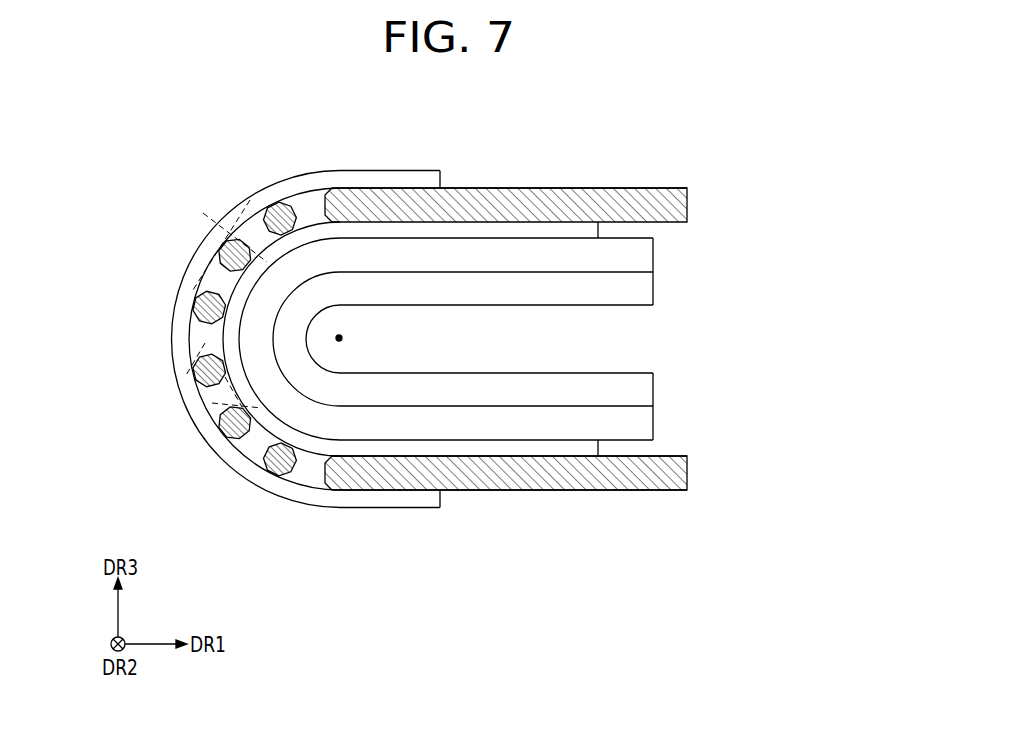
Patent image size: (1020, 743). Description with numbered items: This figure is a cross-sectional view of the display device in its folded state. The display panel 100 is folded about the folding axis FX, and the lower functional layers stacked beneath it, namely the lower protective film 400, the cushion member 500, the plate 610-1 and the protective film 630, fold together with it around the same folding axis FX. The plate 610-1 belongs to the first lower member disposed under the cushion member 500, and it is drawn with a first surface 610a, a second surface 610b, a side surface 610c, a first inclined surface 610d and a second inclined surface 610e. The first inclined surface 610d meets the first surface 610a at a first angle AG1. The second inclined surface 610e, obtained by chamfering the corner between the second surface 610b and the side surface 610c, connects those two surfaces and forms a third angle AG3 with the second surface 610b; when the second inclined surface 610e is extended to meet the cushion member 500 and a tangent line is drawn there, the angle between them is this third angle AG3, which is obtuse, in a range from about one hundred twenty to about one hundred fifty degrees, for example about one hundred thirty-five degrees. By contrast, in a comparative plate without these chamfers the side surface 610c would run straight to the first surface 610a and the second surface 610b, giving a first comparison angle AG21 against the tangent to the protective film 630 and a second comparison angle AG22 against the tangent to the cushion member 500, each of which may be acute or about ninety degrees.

The protective film 630 is at (412, 178).
The cushion member 500 is at (559, 231).
The plate 610-1 is at (676, 204).
The lower protective film 400 is at (643, 253).
The display panel 100 is at (643, 288).
The folding axis FX is at (343, 338).
The second inclined surface 610e is at (322, 438).
The second surface 610b is at (660, 456).
The first surface 610a is at (660, 490).
The side surface 610c is at (321, 476).
The first inclined surface 610d is at (314, 490).
The first comparison angle AG21 is at (206, 259).
The second comparison angle AG22 is at (204, 290).
The first angle AG1 is at (205, 384).
The third angle AG3 is at (217, 440).